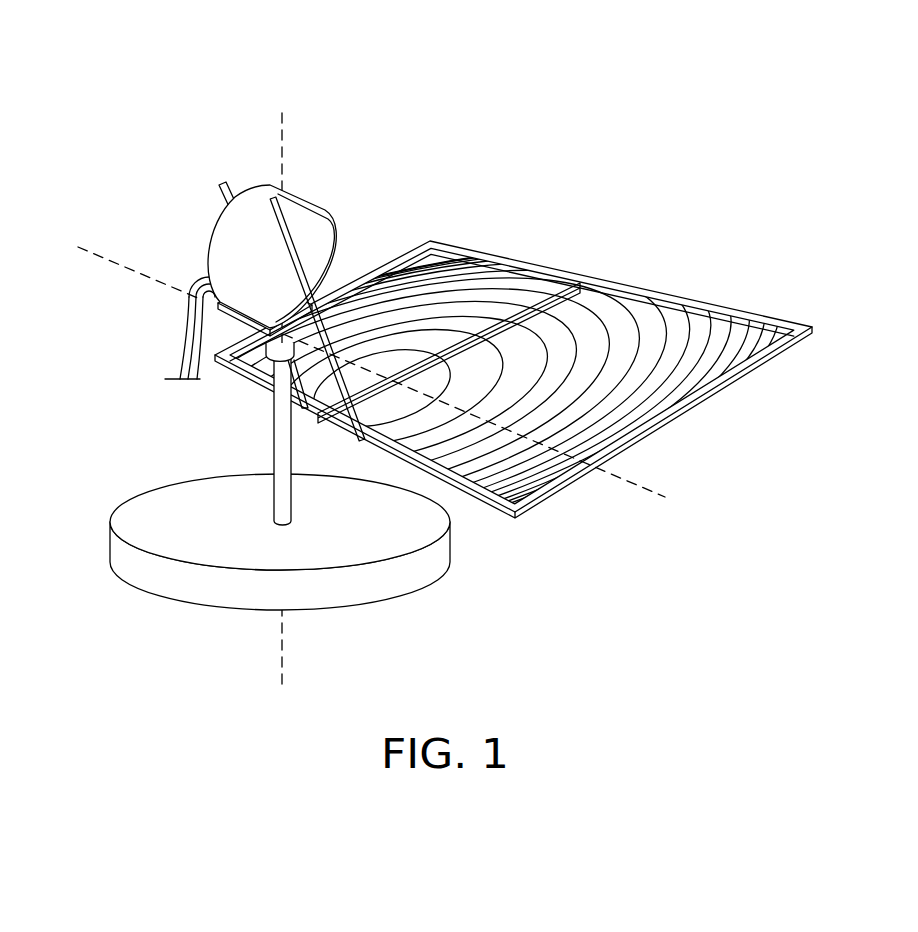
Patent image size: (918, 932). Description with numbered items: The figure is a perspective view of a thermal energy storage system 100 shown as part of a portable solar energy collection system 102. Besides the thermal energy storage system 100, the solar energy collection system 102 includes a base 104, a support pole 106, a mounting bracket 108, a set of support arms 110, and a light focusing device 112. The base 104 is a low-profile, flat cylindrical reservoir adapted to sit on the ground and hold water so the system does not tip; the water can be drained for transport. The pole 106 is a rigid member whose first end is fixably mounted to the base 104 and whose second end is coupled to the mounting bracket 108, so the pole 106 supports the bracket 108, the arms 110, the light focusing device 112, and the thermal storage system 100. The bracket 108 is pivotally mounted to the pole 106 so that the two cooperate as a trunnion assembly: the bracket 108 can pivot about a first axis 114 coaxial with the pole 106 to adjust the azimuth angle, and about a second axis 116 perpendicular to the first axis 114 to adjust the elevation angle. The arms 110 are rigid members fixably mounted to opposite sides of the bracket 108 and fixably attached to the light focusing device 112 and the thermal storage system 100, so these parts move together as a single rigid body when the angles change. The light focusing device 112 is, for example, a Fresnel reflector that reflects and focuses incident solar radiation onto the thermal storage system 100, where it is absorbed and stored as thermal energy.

The thermal energy storage system 100 is at (228, 228).
The portable solar energy collection system 102 is at (463, 84).
The base 104 is at (449, 548).
The support pole 106 is at (272, 495).
The mounting bracket 108 is at (281, 345).
The support arms 110 is at (303, 410).
The light focusing device 112 is at (688, 393).
The first axis 114 is at (282, 120).
The second axis 116 is at (140, 273).